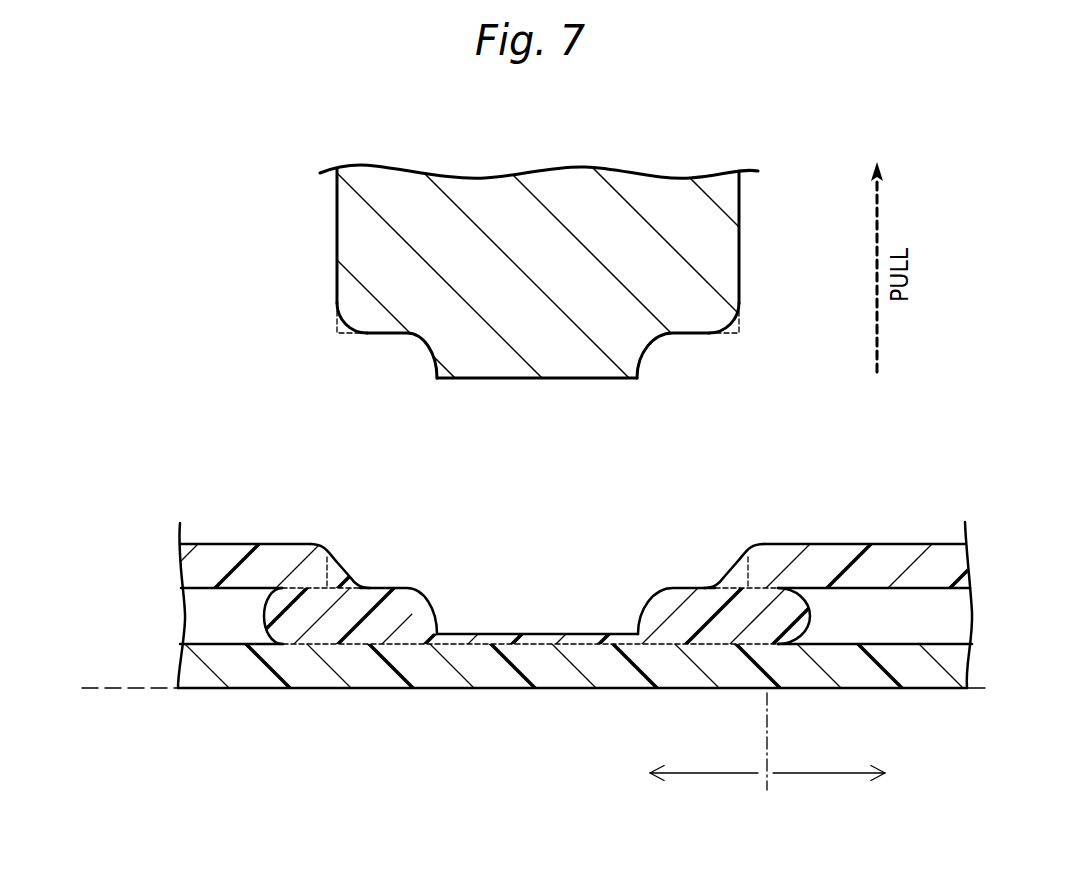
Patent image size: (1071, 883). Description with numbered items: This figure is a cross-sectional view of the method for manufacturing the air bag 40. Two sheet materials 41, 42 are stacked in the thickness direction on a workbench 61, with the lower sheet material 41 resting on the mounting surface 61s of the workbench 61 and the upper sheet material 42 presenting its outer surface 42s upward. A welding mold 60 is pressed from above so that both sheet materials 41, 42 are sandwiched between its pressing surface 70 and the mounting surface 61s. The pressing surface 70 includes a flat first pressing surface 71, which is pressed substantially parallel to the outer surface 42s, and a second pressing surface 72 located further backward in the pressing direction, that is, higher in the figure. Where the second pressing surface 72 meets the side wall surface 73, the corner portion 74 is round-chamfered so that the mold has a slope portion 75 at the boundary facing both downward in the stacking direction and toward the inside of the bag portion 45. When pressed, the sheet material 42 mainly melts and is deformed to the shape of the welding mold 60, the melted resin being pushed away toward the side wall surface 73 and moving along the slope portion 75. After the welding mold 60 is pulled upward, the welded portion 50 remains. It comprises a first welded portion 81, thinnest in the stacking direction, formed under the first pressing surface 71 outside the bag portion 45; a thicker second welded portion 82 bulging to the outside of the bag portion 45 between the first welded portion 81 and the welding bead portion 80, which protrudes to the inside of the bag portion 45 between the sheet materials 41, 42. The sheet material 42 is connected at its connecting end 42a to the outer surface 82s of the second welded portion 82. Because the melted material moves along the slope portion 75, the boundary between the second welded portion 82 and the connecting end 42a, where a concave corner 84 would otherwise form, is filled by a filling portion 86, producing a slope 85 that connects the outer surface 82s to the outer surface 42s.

The air bag 40 is at (532, 607).
The sheet material 41 is at (870, 689).
The sheet material 42 is at (574, 515).
The outer surface 42s is at (574, 515).
The connecting end 42a is at (309, 543).
The bag portion 45 is at (541, 513).
The welded portion 50 is at (539, 570).
The welding mold 60 is at (567, 310).
The workbench 61 is at (526, 642).
The mounting surface 61s is at (95, 688).
The pressing surface 70 is at (567, 310).
The first pressing surface 71 is at (556, 380).
The second pressing surface 72 is at (386, 336).
The side wall surface 73 is at (337, 242).
The corner portion 74 is at (337, 334).
The slope portion 75 is at (338, 327).
The welding bead portion 80 is at (266, 612).
The first welded portion 81 is at (535, 634).
The second welded portion 82 is at (537, 597).
The outer surface 82s is at (383, 588).
The corner 84 is at (338, 562).
The slope 85 is at (537, 557).
The filling portion 86 is at (346, 578).